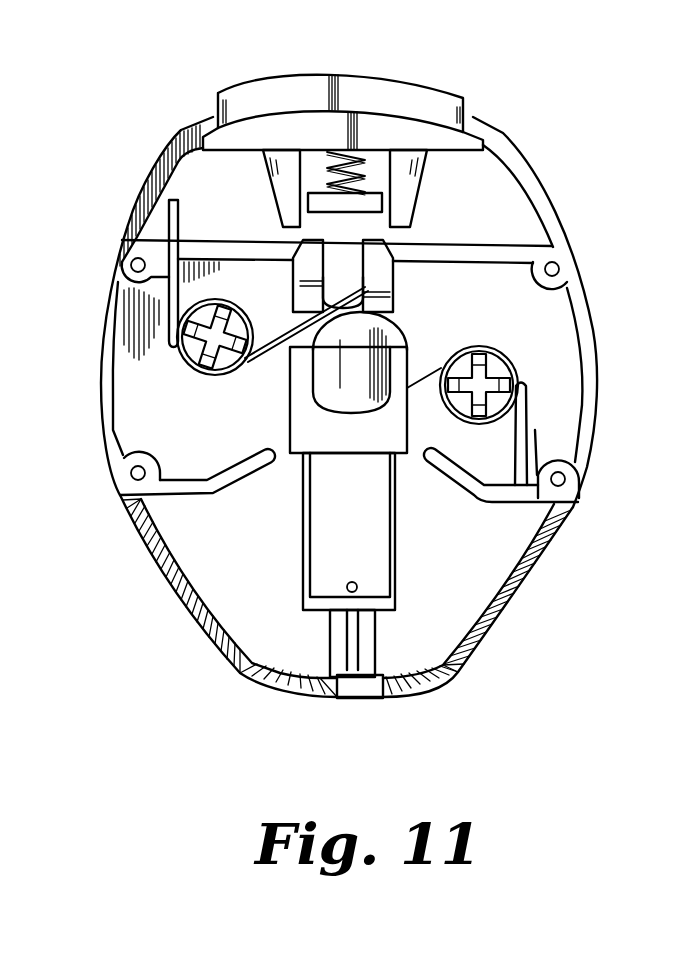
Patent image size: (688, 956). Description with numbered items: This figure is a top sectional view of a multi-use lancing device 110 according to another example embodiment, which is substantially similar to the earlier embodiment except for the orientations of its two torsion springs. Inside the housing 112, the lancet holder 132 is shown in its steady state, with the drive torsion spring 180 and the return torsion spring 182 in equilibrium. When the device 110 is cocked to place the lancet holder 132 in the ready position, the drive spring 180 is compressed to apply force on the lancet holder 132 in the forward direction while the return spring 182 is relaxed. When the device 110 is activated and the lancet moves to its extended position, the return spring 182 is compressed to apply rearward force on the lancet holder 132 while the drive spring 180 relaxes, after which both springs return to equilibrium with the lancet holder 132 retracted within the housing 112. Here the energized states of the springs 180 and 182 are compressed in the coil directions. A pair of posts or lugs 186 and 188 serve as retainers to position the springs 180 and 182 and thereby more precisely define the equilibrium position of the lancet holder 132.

The multi-use lancing device 110 is at (502, 88).
The housing 112 is at (500, 197).
The lancet holder 132 is at (403, 350).
The drive torsion spring 180 is at (245, 358).
The return torsion spring 182 is at (517, 368).
The post or lug 186 is at (169, 288).
The post or lug 188 is at (533, 433).